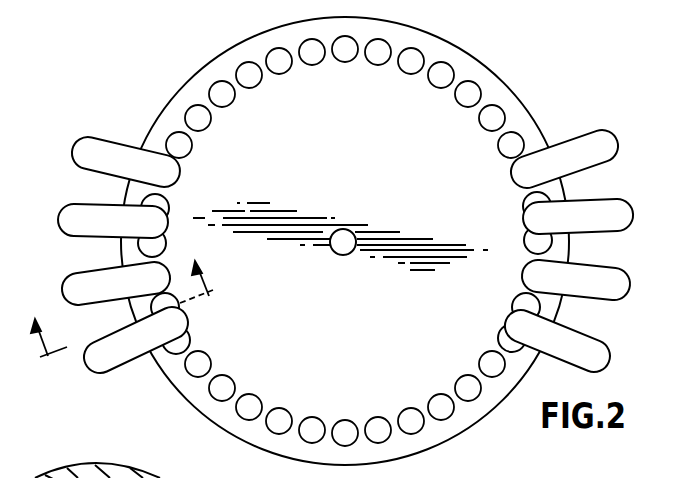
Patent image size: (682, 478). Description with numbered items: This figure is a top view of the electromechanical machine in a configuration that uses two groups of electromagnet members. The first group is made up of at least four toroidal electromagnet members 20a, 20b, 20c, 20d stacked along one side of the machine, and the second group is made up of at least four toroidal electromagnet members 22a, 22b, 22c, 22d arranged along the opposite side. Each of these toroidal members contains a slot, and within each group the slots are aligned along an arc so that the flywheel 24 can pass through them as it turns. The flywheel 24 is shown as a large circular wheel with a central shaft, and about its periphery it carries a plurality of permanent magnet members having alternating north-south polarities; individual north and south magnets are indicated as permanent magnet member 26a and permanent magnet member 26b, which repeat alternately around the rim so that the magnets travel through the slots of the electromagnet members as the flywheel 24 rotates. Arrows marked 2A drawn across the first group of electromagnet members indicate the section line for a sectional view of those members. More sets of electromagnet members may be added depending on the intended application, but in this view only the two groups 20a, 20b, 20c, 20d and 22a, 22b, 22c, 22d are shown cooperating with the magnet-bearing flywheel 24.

The toroidal electromagnet member 20a is at (116, 373).
The toroidal electromagnet member 20b is at (66, 284).
The toroidal electromagnet member 20c is at (62, 206).
The toroidal electromagnet member 20d is at (74, 144).
The toroidal electromagnet member 22a is at (642, 336).
The toroidal electromagnet member 22b is at (624, 283).
The toroidal electromagnet member 22c is at (628, 202).
The toroidal electromagnet member 22d is at (640, 114).
The flywheel 24 is at (435, 194).
The permanent magnet member 26a is at (312, 66).
The permanent magnet member 26b is at (411, 75).
The section line for FIG. 2A is at (126, 317).